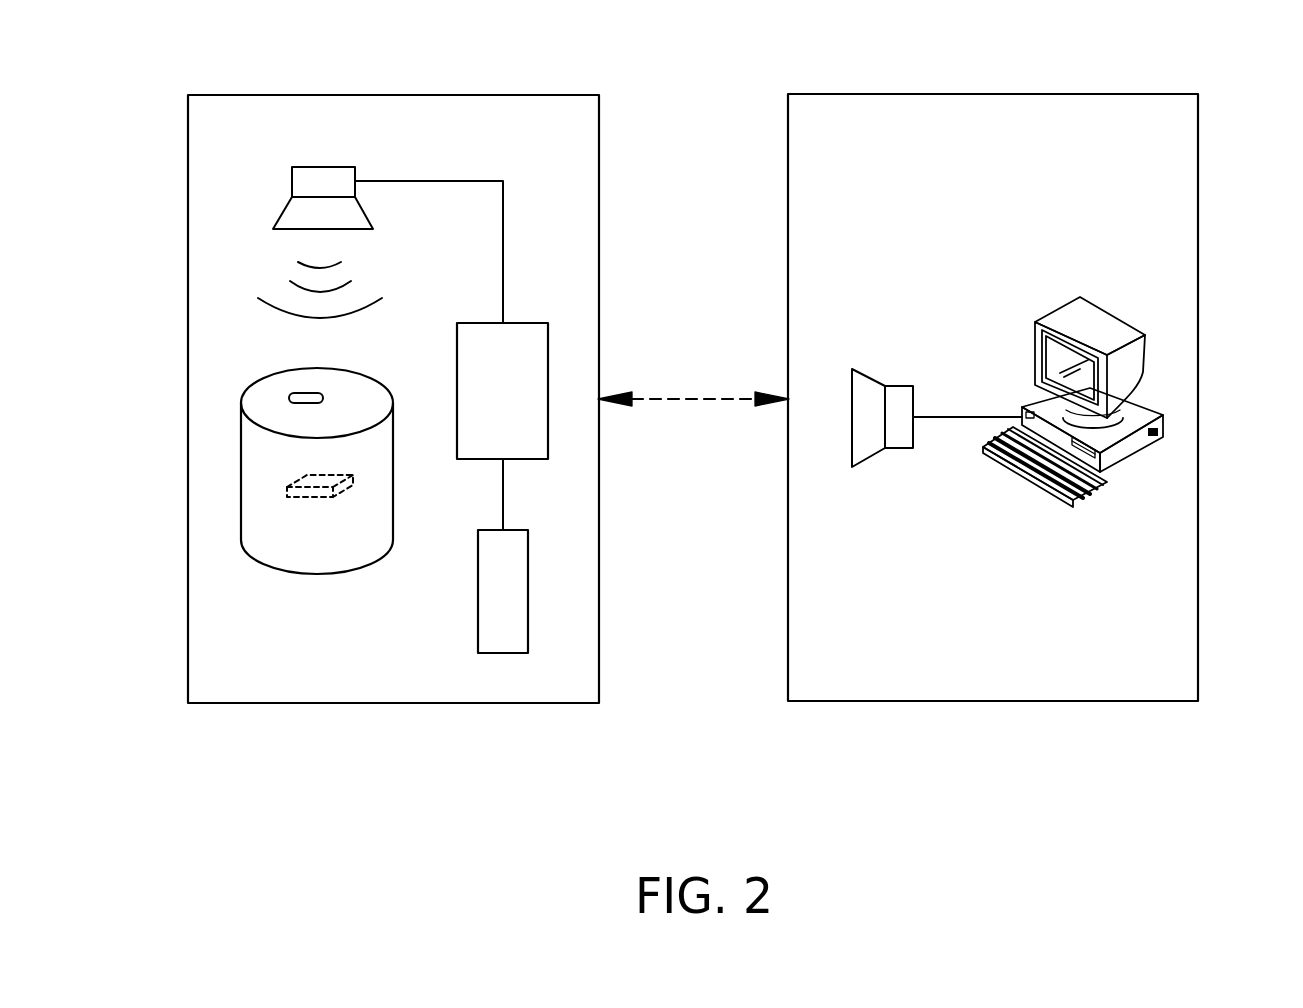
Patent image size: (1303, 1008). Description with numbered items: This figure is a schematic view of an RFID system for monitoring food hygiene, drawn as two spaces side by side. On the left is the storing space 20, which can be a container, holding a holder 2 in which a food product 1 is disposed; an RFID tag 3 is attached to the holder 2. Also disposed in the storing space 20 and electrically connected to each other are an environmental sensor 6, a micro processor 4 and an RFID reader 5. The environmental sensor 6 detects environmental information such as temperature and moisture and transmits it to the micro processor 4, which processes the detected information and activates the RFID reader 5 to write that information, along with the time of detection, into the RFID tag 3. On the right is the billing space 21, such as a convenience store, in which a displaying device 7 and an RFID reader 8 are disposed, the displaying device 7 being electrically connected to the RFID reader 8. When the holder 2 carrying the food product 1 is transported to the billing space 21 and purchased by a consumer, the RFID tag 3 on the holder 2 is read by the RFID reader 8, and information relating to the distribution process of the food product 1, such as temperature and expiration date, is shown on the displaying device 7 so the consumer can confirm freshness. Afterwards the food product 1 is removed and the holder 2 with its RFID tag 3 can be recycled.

The food product 1 is at (287, 490).
The holder 2 is at (241, 468).
The RFID tag 3 is at (289, 394).
The micro processor 4 is at (548, 323).
The RFID reader 5 is at (355, 167).
The environmental sensor 6 is at (528, 591).
The displaying device 7 is at (1143, 333).
The RFID reader 8 is at (900, 386).
The storing space 20 is at (215, 682).
The billing space 21 is at (1171, 688).